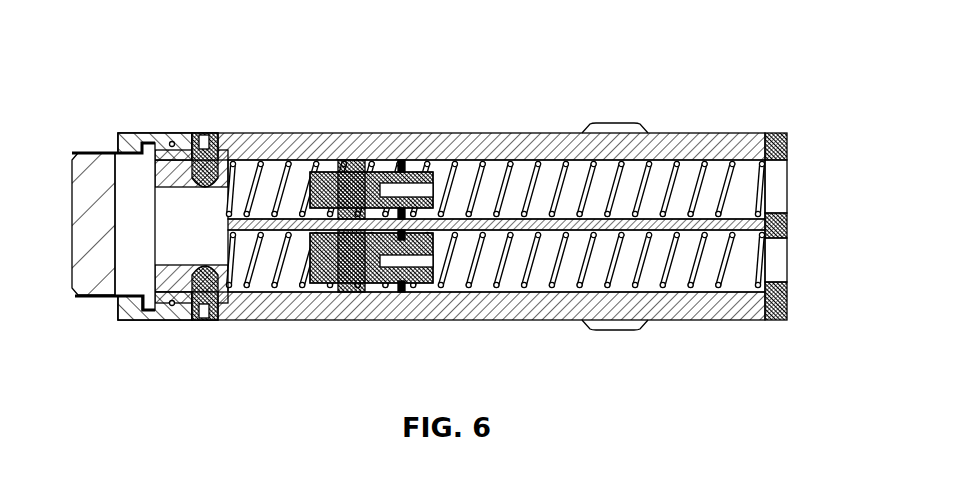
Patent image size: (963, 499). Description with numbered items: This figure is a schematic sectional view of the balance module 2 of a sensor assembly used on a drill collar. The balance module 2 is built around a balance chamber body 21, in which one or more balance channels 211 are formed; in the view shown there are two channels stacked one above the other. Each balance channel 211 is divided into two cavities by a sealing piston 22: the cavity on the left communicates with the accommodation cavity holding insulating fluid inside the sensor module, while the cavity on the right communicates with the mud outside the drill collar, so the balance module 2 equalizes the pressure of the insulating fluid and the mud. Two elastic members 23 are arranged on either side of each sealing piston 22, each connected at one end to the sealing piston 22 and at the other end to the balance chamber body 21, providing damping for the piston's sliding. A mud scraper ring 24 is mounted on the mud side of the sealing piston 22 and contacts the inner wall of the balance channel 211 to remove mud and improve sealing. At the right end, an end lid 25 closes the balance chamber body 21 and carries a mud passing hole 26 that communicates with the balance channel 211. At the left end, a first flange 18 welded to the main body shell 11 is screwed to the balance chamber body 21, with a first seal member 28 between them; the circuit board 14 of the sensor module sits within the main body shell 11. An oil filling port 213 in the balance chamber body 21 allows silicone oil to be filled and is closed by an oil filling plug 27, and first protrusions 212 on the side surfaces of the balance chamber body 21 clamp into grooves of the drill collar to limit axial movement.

The balance module 2 is at (441, 222).
The main body shell 11 is at (110, 298).
The circuit board 14 is at (98, 262).
The first flange 18 is at (140, 137).
The balance chamber body 21 is at (441, 184).
The balance channel 211 is at (479, 185).
The first protrusion 212 is at (612, 128).
The oil filling port 213 is at (208, 137).
The sealing piston 22 is at (348, 183).
The elastic member 23 is at (668, 188).
The mud scraper ring 24 is at (405, 158).
The end lid 25 is at (780, 137).
The mud passing hole 26 is at (775, 198).
The oil filling plug 27 is at (217, 175).
The first seal member 28 is at (170, 307).